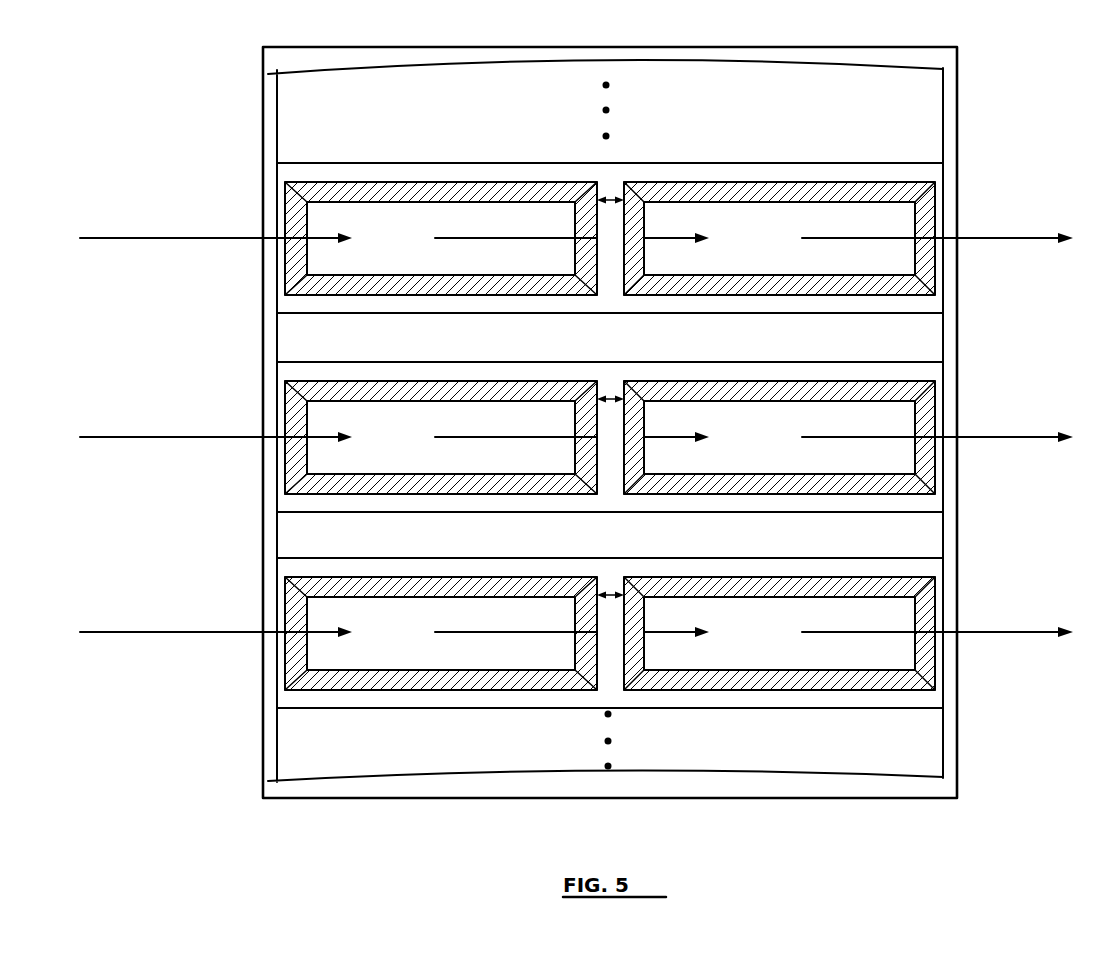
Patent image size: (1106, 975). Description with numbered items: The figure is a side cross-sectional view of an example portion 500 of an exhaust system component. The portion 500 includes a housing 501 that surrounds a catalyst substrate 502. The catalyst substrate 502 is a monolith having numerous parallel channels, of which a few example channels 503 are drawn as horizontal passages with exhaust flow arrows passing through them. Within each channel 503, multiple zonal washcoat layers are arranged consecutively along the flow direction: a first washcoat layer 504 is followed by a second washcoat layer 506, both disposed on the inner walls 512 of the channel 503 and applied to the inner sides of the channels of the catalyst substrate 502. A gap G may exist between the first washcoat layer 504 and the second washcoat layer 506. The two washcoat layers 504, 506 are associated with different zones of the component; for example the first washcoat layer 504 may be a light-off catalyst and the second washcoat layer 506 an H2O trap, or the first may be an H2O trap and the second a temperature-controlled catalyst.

The portion of exhaust system component 500 is at (157, 57).
The housing 501 is at (263, 80).
The catalyst substrate 502 is at (943, 126).
The channels 503 is at (301, 163).
The first washcoat layer 504 is at (522, 190).
The second washcoat layer 506 is at (793, 190).
The inner walls 512 is at (392, 193).
The gap G is at (610, 196).